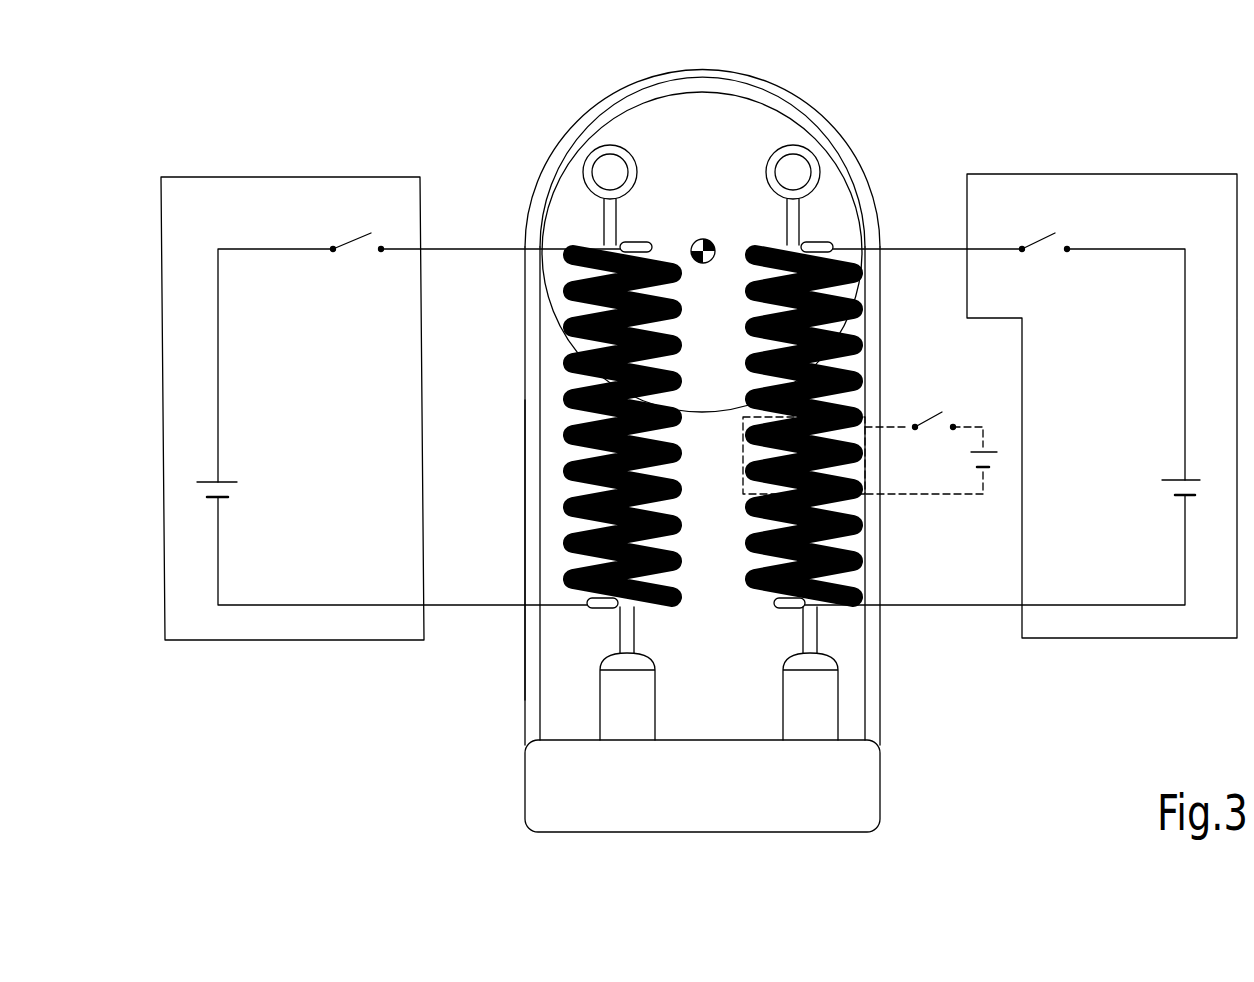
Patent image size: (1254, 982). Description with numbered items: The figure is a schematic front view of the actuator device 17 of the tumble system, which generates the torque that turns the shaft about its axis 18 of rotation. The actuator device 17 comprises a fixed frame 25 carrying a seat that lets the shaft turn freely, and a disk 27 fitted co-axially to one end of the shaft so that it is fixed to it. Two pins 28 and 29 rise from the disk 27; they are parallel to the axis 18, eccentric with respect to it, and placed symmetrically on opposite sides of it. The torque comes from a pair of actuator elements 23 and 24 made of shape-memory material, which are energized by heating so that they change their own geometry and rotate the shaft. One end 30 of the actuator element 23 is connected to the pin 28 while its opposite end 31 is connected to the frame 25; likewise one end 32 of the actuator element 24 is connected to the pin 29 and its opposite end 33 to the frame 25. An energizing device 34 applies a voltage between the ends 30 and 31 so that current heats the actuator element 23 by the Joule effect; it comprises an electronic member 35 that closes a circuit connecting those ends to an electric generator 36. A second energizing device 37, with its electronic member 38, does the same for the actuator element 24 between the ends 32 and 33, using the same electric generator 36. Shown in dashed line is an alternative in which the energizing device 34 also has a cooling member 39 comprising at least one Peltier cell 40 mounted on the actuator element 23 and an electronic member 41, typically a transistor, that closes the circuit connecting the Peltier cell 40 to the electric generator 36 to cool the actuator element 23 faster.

The actuator device 17 is at (445, 725).
The axis of rotation 18 is at (703, 238).
The actuator element 23 is at (886, 388).
The actuator element 24 is at (522, 441).
The fixed frame 25 is at (845, 773).
The disk 27 is at (712, 118).
The pin 28 is at (800, 165).
The pin 29 is at (603, 167).
The end of actuator element 23 30 is at (820, 247).
The opposite end of actuator element 23 31 is at (815, 616).
The end of actuator element 24 32 is at (600, 247).
The opposite end of actuator element 24 33 is at (612, 615).
The energizing device 34 is at (1080, 174).
The electronic member 35 is at (1048, 234).
The electric generator 36 is at (224, 496).
The energizing device 37 is at (232, 177).
The electronic member 38 is at (350, 245).
The cooling member 39 is at (988, 500).
The Peltier cell 40 is at (866, 507).
The electronic member 41 is at (945, 413).